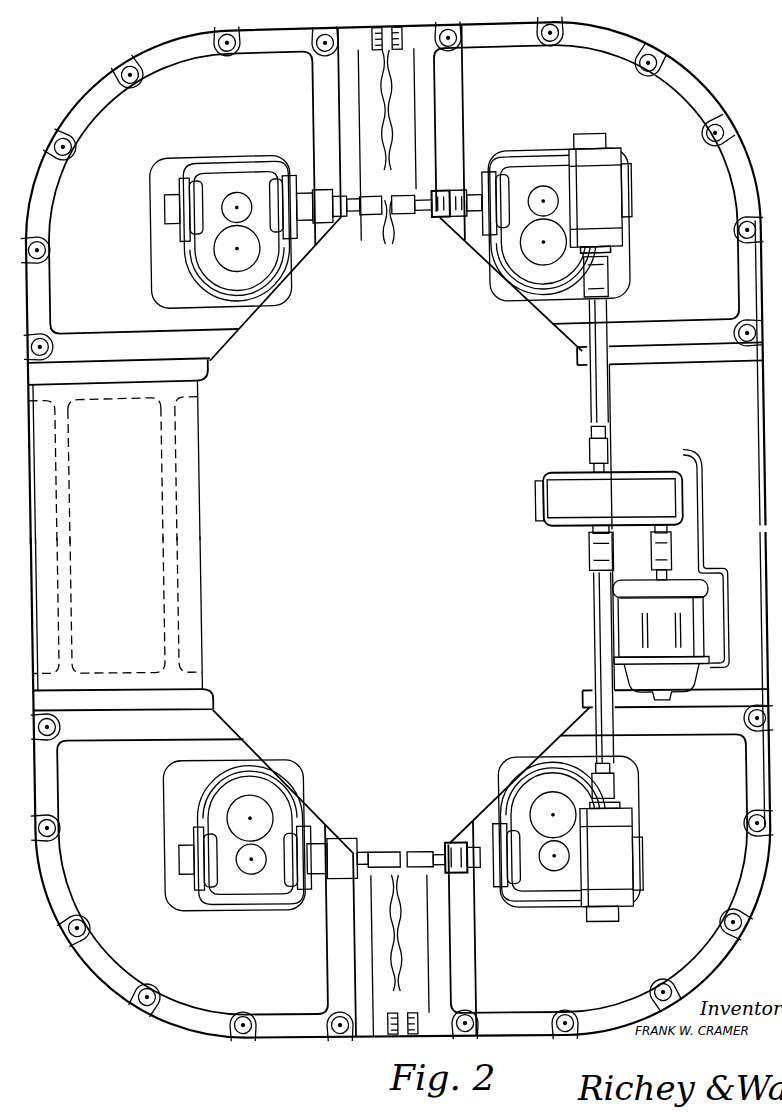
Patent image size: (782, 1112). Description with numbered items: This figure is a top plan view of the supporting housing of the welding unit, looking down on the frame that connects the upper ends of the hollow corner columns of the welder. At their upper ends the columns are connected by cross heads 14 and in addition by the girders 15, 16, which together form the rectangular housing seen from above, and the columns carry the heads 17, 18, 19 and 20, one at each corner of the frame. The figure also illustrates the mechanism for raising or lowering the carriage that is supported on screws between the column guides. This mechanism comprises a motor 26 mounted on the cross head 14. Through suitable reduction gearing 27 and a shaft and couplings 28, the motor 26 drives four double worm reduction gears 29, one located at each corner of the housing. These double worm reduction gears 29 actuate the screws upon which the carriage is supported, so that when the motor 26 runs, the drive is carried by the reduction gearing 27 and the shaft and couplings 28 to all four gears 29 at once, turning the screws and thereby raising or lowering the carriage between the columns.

The cross head 14 is at (719, 433).
The girder 15 is at (415, 853).
The girder 16 is at (419, 188).
The head 17 is at (586, 183).
The head 18 is at (599, 873).
The head 19 is at (192, 877).
The head 20 is at (181, 192).
The motor 26 is at (696, 595).
The reduction gearing 27 is at (638, 503).
The shaft and couplings 28 is at (592, 398).
The double worm reduction gear 29 is at (522, 261).